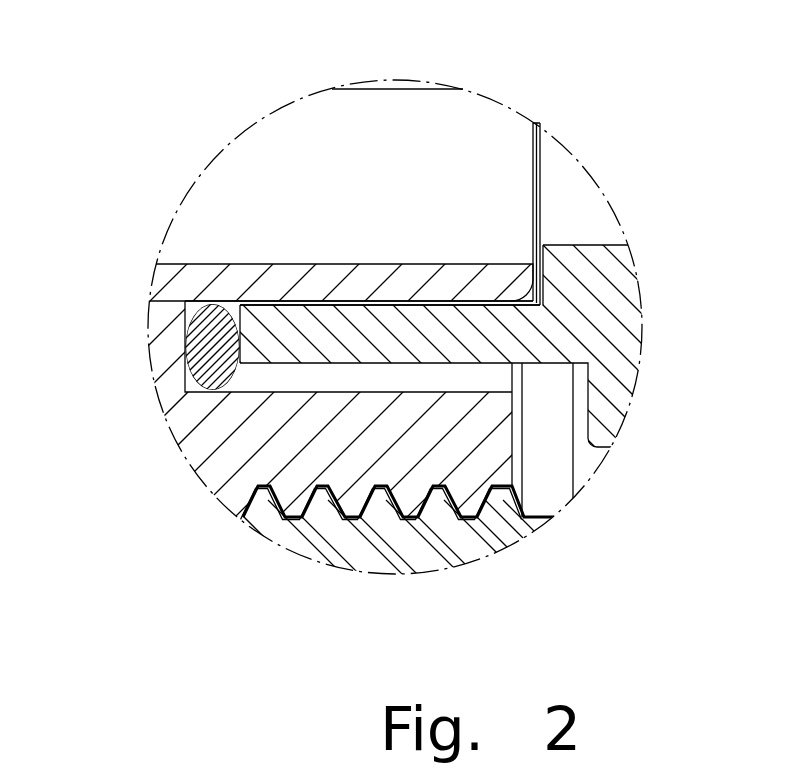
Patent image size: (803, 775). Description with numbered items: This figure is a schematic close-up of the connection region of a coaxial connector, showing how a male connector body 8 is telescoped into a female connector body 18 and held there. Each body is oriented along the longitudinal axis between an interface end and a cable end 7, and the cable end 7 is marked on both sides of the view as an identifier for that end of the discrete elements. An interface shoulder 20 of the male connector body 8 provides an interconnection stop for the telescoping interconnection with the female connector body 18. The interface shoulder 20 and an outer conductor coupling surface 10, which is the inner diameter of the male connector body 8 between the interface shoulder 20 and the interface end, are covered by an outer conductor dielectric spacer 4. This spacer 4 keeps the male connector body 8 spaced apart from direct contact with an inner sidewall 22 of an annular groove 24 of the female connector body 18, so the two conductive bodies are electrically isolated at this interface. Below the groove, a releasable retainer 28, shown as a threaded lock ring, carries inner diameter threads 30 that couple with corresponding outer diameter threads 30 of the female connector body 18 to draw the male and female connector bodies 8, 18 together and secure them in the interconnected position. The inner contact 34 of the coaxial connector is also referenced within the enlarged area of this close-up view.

The outer conductor dielectric spacer 4 is at (250, 302).
The outer conductor coupling surface 10 is at (341, 303).
The inner contact 34 is at (380, 82).
The inner sidewall 22 is at (423, 303).
The interface shoulder 20 is at (540, 277).
The male connector body 8 is at (603, 262).
The cable end 7 is at (118, 343).
The annular groove 24 is at (303, 378).
The female connector body 18 is at (298, 392).
The threads 30 is at (355, 492).
The releasable retainer 28 is at (507, 530).